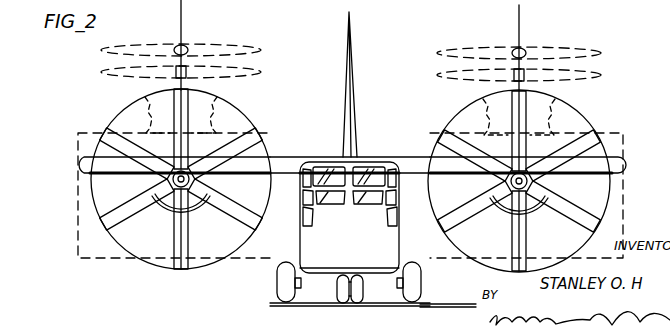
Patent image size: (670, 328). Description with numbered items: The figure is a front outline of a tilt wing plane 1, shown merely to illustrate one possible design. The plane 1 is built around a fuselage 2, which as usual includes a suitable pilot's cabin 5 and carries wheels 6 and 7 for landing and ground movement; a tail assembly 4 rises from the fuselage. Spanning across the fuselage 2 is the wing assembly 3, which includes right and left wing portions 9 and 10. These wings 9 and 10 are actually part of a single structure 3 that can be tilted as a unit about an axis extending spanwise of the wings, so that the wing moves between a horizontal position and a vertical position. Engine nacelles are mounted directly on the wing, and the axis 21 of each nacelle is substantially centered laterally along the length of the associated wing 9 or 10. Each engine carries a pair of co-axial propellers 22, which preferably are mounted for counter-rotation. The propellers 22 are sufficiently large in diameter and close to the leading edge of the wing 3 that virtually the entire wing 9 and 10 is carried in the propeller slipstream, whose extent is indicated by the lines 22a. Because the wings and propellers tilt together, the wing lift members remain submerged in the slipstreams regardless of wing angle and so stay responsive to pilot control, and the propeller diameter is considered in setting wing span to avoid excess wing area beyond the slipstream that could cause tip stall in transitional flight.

The tilt wing plane 1 is at (371, 118).
The fuselage 2 is at (383, 243).
The wing assembly 3 is at (555, 131).
The tail assembly 4 is at (352, 62).
The pilot's cabin 5 is at (380, 172).
The wheels 6 is at (400, 293).
The wheels 7 is at (350, 297).
The right wing portion 9 is at (252, 174).
The left wing portion 10 is at (448, 176).
The axis of engine nacelle 21 is at (181, 22).
The propellers 22 is at (118, 214).
The slipstream lines 22a is at (121, 257).